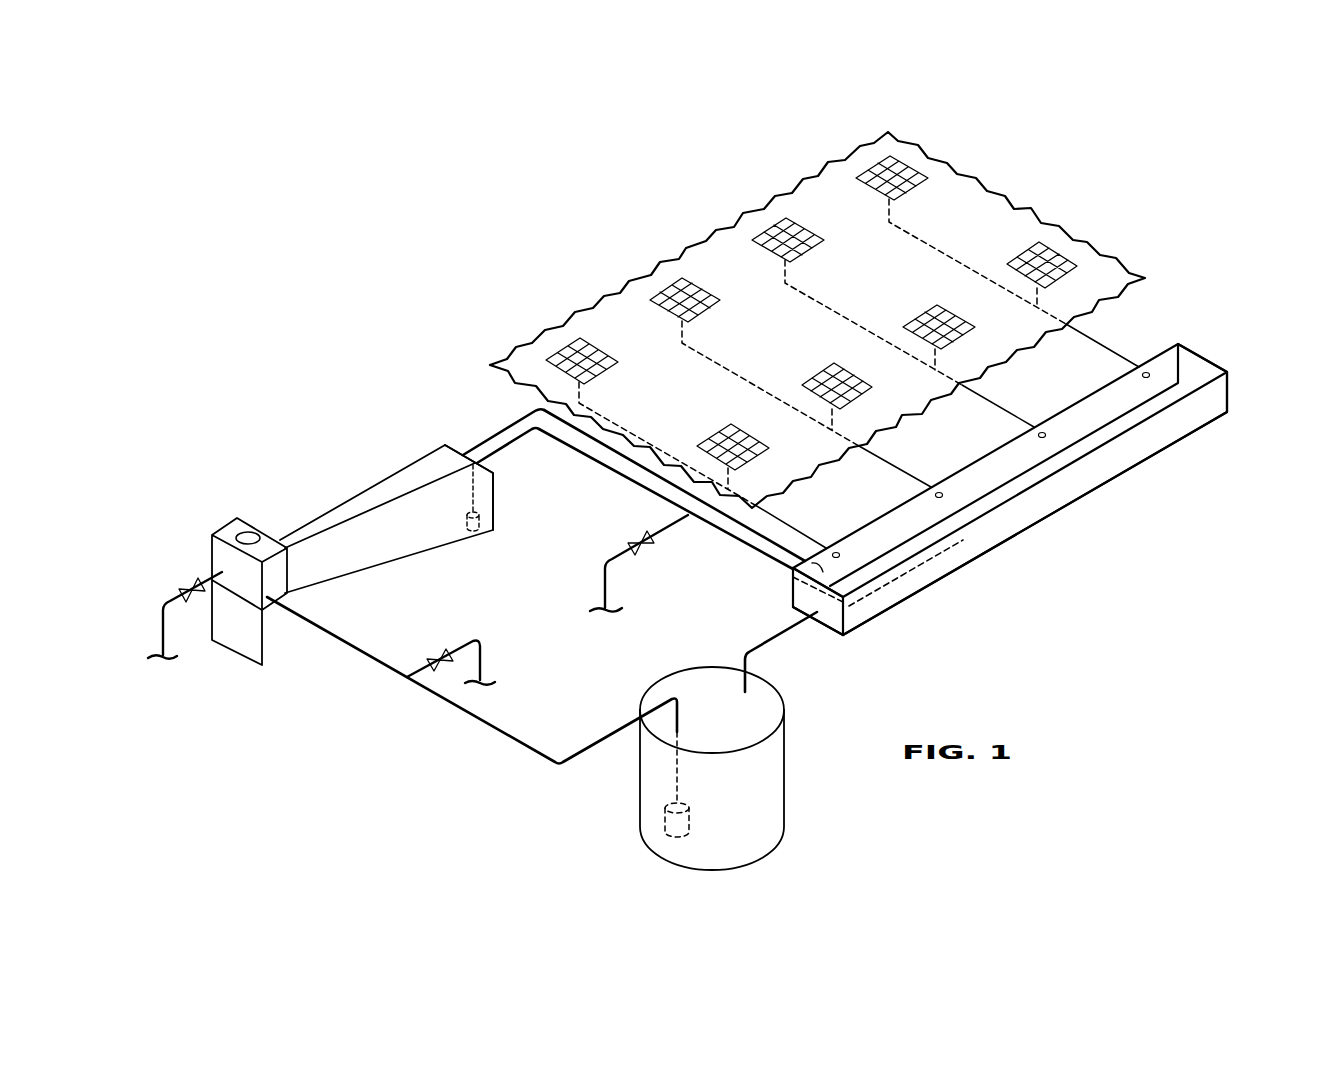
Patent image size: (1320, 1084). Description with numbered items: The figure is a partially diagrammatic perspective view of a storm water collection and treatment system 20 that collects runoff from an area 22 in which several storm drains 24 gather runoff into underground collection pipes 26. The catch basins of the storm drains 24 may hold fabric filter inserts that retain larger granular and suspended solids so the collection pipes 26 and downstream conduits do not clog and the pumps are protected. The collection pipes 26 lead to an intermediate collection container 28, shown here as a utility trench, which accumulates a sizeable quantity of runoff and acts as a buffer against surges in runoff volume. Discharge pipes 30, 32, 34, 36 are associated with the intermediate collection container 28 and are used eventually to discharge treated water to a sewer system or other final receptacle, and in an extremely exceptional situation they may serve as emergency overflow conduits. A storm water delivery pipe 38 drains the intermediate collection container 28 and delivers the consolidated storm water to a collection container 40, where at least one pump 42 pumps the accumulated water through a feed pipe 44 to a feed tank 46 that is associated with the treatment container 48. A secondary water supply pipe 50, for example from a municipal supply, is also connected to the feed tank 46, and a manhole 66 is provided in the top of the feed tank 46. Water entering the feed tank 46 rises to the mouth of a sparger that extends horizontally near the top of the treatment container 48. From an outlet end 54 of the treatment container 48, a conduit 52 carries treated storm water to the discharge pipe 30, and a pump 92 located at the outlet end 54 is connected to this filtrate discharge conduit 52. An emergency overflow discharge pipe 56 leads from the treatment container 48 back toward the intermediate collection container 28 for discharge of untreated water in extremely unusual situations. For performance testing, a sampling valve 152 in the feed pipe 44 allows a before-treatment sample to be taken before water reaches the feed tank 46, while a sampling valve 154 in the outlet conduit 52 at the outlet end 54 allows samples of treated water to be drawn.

The storm water collection and treatment system 20 is at (397, 403).
The area 22 is at (720, 229).
The storm drains 24 is at (619, 364).
The underground collection pipes 26 is at (757, 387).
The intermediate collection container 28 is at (1200, 357).
The discharge pipe 30 is at (858, 613).
The discharge pipe 32 is at (965, 541).
The discharge pipe 34 is at (1087, 482).
The discharge pipe 36 is at (1189, 422).
The storm water delivery pipe 38 is at (783, 631).
The collection container 40 is at (785, 771).
The pump 42 is at (690, 821).
The feed pipe 44 is at (456, 707).
The feed tank 46 is at (212, 548).
The treatment container 48 is at (350, 493).
The secondary water supply pipe 50 is at (163, 608).
The conduit 52 is at (595, 460).
The outlet end 54 is at (497, 501).
The emergency overflow discharge pipe 56 is at (487, 434).
The manhole 66 is at (248, 534).
The pump 92 is at (474, 534).
The sampling valve 152 is at (448, 655).
The sampling valve 154 is at (638, 540).